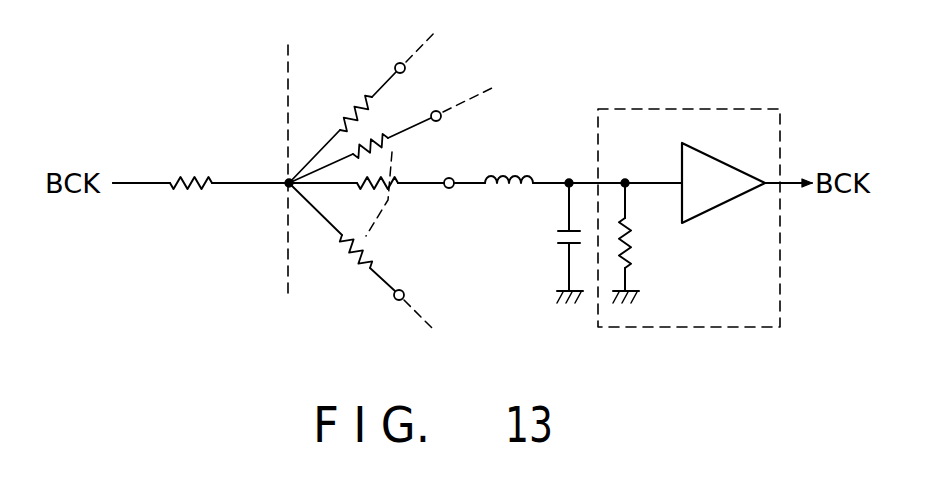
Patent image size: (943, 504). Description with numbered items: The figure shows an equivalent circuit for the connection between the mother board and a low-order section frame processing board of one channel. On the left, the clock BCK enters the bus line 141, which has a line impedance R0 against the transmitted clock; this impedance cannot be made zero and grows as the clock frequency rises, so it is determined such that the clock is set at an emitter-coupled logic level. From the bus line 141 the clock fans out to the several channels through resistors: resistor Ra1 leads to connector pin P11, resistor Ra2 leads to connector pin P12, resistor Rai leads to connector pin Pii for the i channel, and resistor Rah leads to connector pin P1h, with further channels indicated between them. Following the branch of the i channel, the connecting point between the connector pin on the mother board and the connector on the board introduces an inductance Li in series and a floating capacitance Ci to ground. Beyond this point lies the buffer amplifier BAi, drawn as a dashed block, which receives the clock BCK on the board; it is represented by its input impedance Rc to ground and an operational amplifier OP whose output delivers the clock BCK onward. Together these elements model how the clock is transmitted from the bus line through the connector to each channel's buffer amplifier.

The bus line 141 is at (134, 185).
The line impedance R0 is at (191, 166).
The resistor Ra1 is at (342, 124).
The resistor Ra2 is at (362, 134).
The resistor Rai is at (366, 200).
The resistor Rah is at (342, 243).
The connector pin P11 is at (395, 63).
The connector pin P12 is at (441, 108).
The connector pin Pii is at (449, 178).
The connector pin P1h is at (405, 295).
The inductance Li is at (509, 164).
The floating capacitance Ci is at (551, 243).
The input impedance Rc is at (642, 243).
The operational amplifier OP is at (718, 207).
The buffer amplifier BAi is at (678, 108).